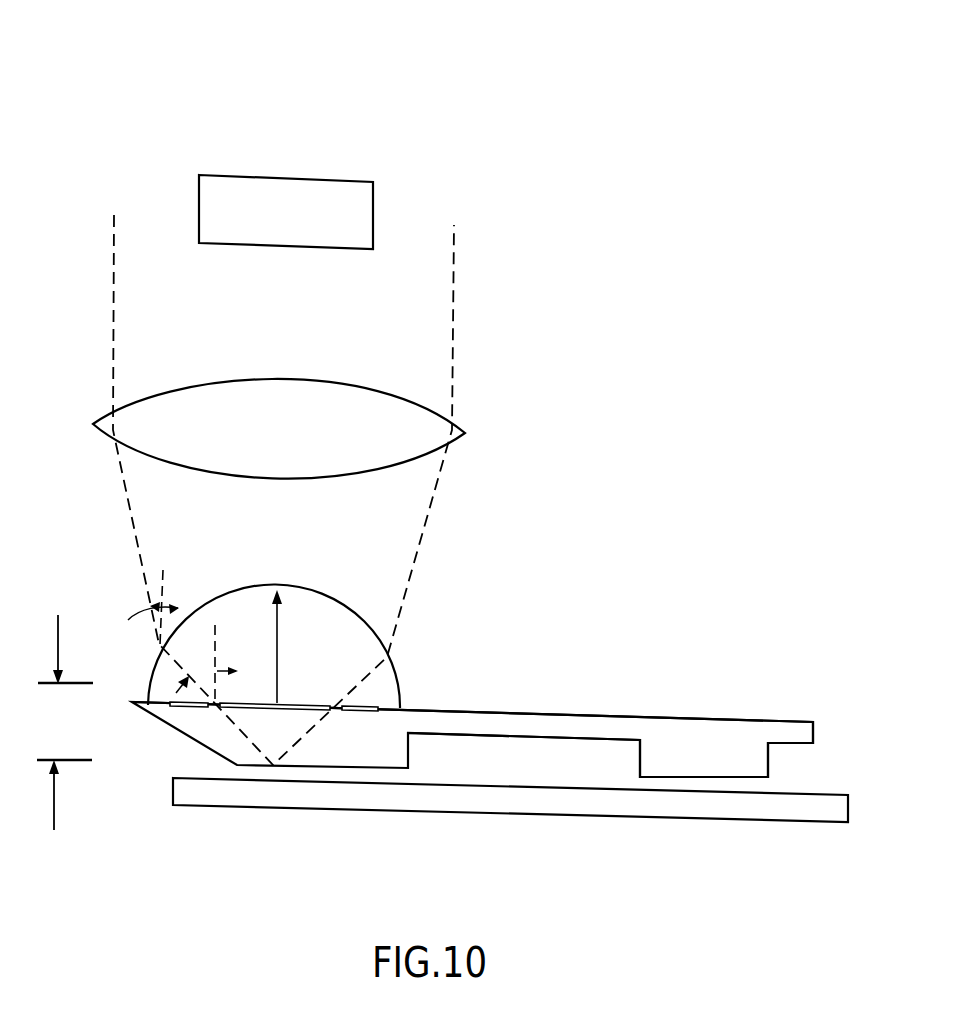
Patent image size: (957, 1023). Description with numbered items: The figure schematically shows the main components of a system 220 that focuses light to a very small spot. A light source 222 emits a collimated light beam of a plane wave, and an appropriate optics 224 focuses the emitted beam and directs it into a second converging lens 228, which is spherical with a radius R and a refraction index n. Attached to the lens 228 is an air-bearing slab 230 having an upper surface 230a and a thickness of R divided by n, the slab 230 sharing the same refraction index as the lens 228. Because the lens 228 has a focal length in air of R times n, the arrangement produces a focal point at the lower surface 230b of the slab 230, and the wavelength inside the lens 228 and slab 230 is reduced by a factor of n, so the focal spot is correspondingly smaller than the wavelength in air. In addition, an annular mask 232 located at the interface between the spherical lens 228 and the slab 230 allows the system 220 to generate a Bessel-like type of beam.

The system 220 is at (102, 123).
The light source 222 is at (352, 180).
The optics 224 is at (408, 420).
The second converging lens 228 is at (215, 598).
The air-bearing slab 230 is at (353, 745).
The upper surface 230a is at (605, 713).
The lower surface 230b is at (332, 767).
The annular mask 232 is at (250, 708).